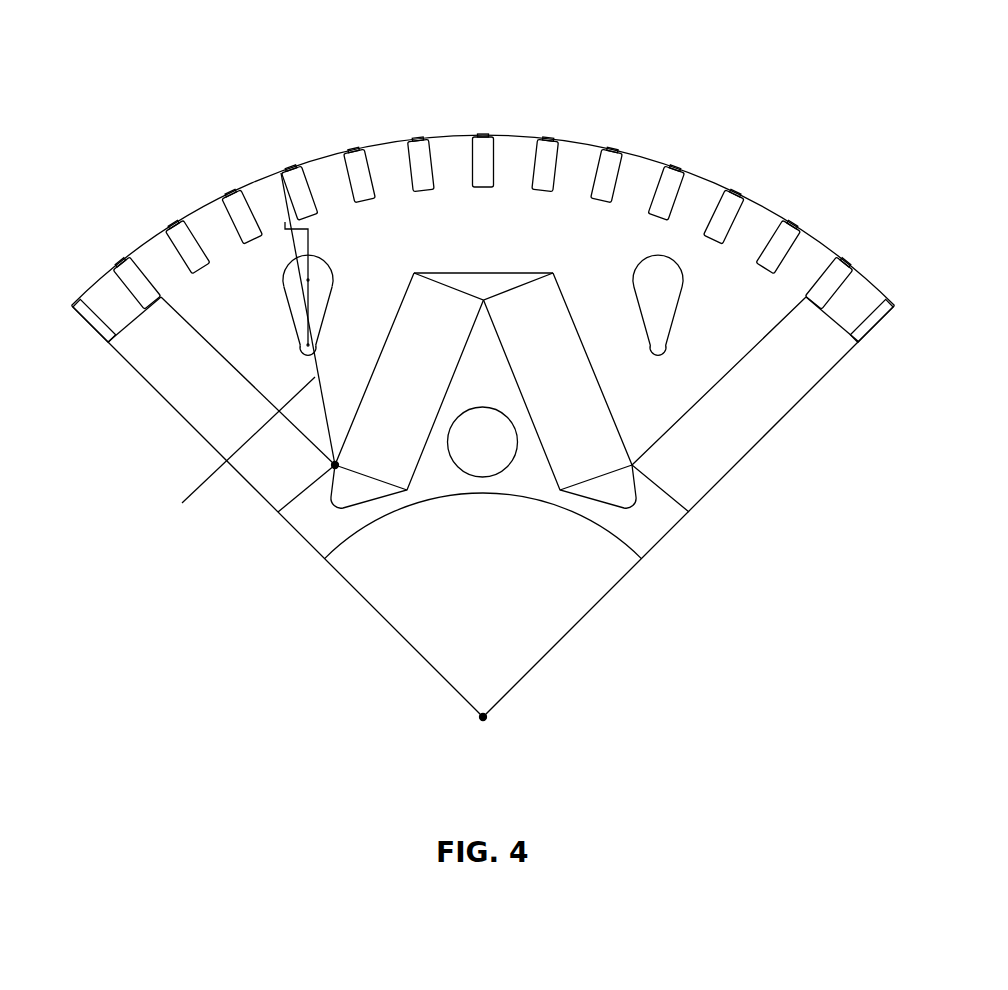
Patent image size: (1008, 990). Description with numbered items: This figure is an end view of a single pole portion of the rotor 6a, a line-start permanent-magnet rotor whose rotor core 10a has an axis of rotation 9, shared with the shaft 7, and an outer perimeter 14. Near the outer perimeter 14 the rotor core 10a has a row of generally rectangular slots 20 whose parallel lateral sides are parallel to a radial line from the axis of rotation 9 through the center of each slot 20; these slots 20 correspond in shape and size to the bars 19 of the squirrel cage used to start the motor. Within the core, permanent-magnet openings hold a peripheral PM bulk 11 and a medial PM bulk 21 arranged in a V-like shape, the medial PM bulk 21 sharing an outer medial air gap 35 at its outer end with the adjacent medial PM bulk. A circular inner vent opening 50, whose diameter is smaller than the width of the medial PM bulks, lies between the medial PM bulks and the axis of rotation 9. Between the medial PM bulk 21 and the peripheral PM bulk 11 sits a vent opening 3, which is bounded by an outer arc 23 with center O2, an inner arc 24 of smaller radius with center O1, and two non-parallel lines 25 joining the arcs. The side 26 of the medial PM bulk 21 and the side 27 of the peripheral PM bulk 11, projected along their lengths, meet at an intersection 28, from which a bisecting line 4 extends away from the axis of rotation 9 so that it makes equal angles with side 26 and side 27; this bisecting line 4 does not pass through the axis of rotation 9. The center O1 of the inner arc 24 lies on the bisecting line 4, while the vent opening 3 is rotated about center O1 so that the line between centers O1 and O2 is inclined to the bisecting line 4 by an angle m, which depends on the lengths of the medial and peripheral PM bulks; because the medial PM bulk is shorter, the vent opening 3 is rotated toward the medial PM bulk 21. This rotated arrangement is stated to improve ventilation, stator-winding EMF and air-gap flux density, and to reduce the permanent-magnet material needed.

The rotor 6a is at (787, 72).
The rotor core 10a is at (578, 165).
The outer perimeter 14 is at (452, 135).
The bars 19 is at (667, 190).
The slots 20 is at (792, 252).
The vent opening 3 is at (273, 270).
The shaft 7 is at (500, 612).
The axis of rotation 9 is at (487, 722).
The medial PM bulk 21 is at (416, 318).
The outer medial air gap 35 is at (516, 261).
The side of medial PM bulk 26 is at (410, 303).
The inner vent openings 50 is at (473, 460).
The peripheral PM bulk 11 is at (188, 375).
The side of peripheral PM bulk 27 is at (168, 300).
The bisecting line 4 is at (237, 452).
The intersection 28 is at (335, 465).
The angle m is at (308, 319).
The outer arc 23 is at (318, 258).
The non-parallel lines 25 is at (334, 304).
The inner arc 24 is at (317, 350).
The center of outer arc O2 is at (306, 279).
The center of inner arc O1 is at (308, 345).